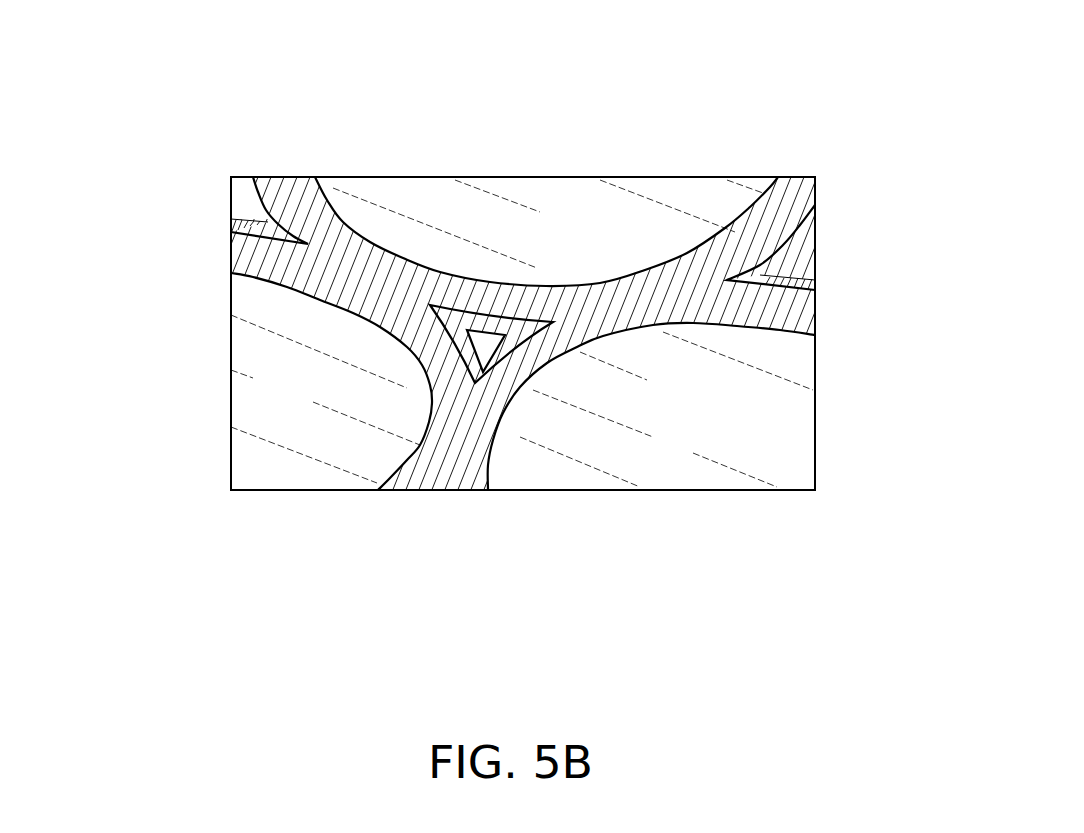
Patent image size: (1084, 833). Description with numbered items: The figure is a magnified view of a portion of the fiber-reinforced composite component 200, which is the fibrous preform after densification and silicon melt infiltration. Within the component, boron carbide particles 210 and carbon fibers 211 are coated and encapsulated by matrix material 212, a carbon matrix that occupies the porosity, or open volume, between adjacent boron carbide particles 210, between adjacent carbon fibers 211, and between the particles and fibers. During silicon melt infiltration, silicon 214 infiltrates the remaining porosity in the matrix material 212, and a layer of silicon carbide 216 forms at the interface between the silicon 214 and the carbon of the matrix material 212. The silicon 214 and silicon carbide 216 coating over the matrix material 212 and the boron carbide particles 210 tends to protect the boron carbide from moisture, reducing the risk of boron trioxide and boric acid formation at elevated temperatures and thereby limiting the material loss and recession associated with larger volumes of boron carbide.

The fiber-reinforced composite component 200 is at (142, 80).
The boron carbide particles 210 is at (302, 395).
The carbon fibers 211 is at (575, 228).
The matrix material 212 is at (315, 218).
The silicon 214 is at (245, 196).
The silicon carbide 216 is at (266, 195).